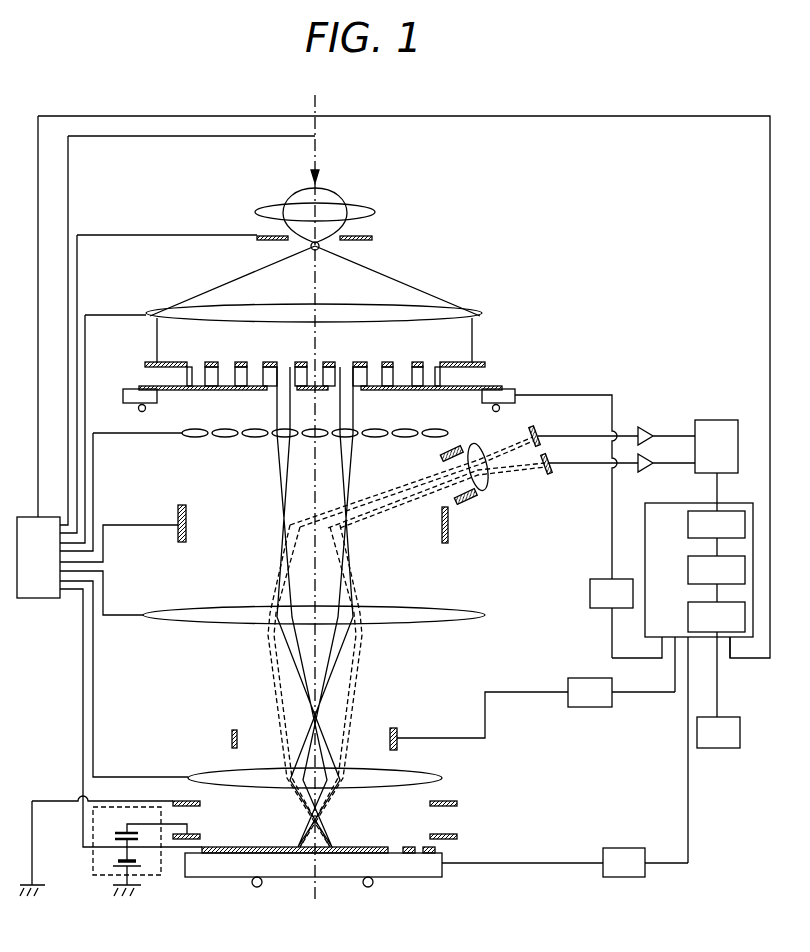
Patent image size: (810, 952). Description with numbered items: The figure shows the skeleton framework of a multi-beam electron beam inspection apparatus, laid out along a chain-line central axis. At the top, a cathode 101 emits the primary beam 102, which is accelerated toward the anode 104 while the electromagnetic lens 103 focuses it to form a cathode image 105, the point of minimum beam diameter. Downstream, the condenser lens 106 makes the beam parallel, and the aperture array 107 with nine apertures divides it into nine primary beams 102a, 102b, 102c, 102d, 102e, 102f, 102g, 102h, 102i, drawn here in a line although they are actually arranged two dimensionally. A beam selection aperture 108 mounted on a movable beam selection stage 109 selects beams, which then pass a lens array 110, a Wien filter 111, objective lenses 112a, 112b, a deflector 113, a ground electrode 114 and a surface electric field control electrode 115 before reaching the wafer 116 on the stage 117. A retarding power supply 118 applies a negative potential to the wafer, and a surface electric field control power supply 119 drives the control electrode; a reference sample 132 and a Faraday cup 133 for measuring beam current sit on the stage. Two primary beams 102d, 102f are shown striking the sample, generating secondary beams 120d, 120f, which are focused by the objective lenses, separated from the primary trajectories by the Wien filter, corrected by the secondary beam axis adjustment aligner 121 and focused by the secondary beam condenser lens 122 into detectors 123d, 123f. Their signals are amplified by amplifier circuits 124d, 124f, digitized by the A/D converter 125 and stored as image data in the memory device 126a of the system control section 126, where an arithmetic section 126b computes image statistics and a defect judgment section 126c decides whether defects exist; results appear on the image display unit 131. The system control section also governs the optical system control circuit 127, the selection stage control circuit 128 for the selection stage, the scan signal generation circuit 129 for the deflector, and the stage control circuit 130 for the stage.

The cathode 101 is at (322, 178).
The primary beam 102 is at (297, 193).
The electromagnetic lens 103 is at (258, 210).
The anode 104 is at (374, 238).
The cathode image 105 is at (310, 248).
The condenser lens 106 is at (485, 313).
The aperture array 107 is at (348, 358).
The beam selection aperture 108 is at (302, 413).
The beam selection stage 109 is at (133, 403).
The lens array 110 is at (195, 438).
The Wien filter 111 is at (178, 513).
The objective lens 112a is at (183, 612).
The objective lens 112b is at (215, 773).
The deflector 113 is at (398, 732).
The ground electrode 114 is at (458, 803).
The surface electric field control electrode 115 is at (458, 835).
The wafer 116 is at (370, 848).
The stage 117 is at (203, 877).
The retarding power supply 118 is at (113, 864).
The surface electric field control power supply 119 is at (110, 815).
The secondary beam 120d is at (323, 845).
The secondary beam 120f is at (308, 845).
The secondary beam axis adjustment aligner 121 is at (465, 500).
The secondary beam condenser lens 122 is at (485, 480).
The detector 123d is at (548, 408).
The detector 123f is at (548, 472).
The amplifier circuit 124d is at (650, 426).
The amplifier circuit 124f is at (646, 472).
The A/D converter 125 is at (716, 465).
The system control section 126 is at (659, 683).
The memory device 126a is at (716, 524).
The arithmetic section 126b is at (716, 570).
The defect judgment section 126c is at (716, 617).
The optical system control circuit 127 is at (38, 557).
The selection stage control circuit 128 is at (574, 526).
The scan signal generation circuit 129 is at (621, 692).
The stage control circuit 130 is at (645, 862).
The image display unit 131 is at (718, 732).
The reference sample 132 is at (406, 853).
The Faraday cup 133 is at (437, 851).
The primary beam 102a is at (196, 382).
The primary beam 102b is at (227, 367).
The primary beam 102c is at (257, 382).
The primary beam 102d is at (285, 367).
The primary beam 102e is at (317, 385).
The primary beam 102f is at (345, 367).
The primary beam 102g is at (375, 382).
The primary beam 102h is at (403, 367).
The primary beam 102i is at (435, 382).